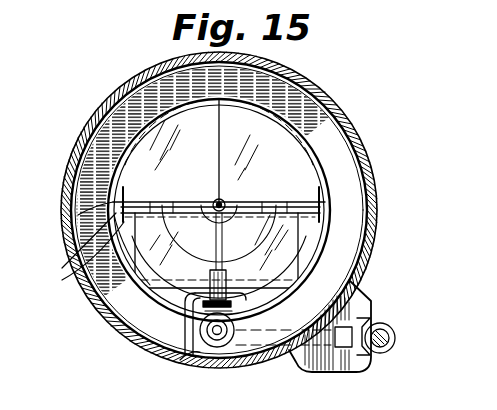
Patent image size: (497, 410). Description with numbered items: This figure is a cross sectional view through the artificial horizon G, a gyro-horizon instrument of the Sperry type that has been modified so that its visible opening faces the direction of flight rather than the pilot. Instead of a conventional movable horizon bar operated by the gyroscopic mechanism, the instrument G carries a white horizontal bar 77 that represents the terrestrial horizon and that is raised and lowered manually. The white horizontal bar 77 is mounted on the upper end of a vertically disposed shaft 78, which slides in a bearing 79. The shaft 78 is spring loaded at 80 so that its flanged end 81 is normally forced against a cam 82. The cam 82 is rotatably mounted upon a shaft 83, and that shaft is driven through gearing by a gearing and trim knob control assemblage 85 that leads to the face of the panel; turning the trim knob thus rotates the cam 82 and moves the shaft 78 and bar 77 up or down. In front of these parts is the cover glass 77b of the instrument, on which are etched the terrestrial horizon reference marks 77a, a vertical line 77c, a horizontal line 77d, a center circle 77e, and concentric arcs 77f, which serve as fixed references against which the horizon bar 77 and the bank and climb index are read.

The artificial horizon G is at (366, 167).
The white horizontal bar 77 is at (211, 202).
The terrestrial horizon reference marks 77a is at (325, 207).
The cover glass 77b is at (290, 140).
The vertical line 77c is at (224, 127).
The horizontal line 77d is at (172, 202).
The center circle 77e is at (250, 203).
The concentric arcs 77f is at (77, 241).
The vertically disposed shaft 78 is at (209, 209).
The bearing 79 is at (236, 297).
The spring loading 80 is at (236, 305).
The flanged end of the shaft 81 is at (192, 322).
The cam 82 is at (207, 318).
The shaft 83 is at (214, 338).
The gearing and trim knob control assemblage 85 is at (383, 330).